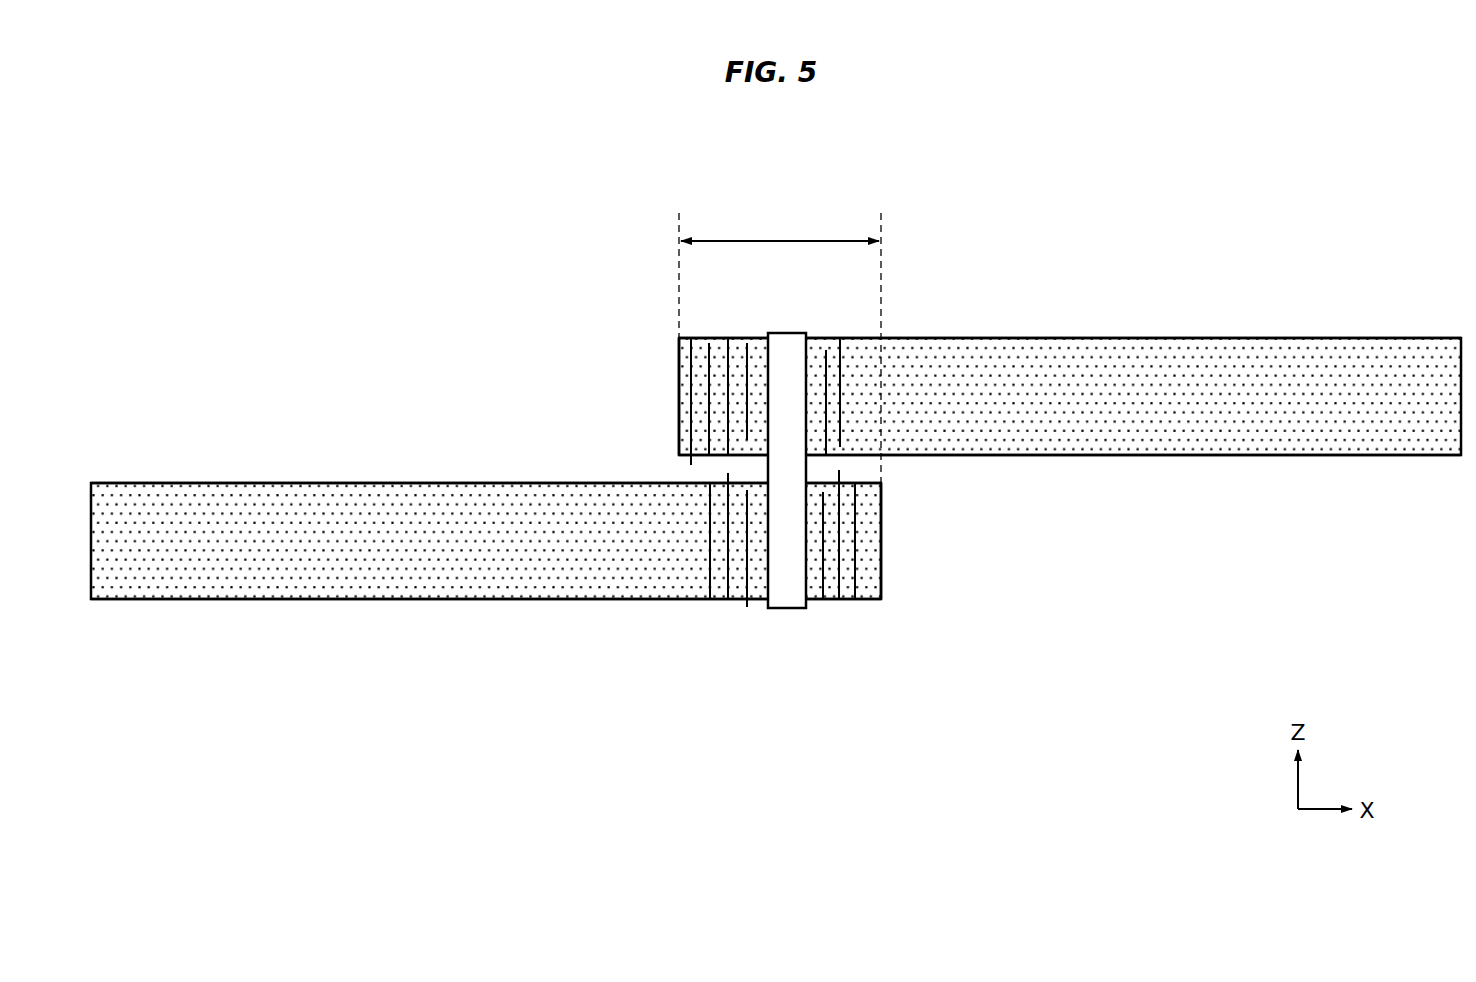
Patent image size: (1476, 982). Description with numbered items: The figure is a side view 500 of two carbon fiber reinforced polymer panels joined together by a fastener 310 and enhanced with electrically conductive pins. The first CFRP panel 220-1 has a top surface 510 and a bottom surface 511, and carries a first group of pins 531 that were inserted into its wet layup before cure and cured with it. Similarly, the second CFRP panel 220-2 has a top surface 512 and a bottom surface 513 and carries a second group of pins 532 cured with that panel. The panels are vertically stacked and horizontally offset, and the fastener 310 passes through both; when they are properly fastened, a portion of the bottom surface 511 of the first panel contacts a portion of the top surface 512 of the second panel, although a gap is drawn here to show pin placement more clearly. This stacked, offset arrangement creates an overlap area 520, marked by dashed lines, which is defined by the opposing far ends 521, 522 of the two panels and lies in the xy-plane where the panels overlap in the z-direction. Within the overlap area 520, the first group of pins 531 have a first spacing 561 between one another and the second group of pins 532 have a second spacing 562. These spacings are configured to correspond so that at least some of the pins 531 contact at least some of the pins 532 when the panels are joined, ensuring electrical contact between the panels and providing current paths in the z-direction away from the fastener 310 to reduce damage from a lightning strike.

The side view 500 is at (517, 161).
The first CFRP panel 220-1 is at (1325, 338).
The second CFRP panel 220-2 is at (213, 483).
The top surface 510 is at (1149, 334).
The bottom surface 511 is at (1149, 460).
The top surface 512 is at (364, 477).
The bottom surface 513 is at (364, 605).
The overlap area 520 is at (733, 240).
The far end 521 is at (676, 417).
The far end 522 is at (885, 510).
The first group of pins 531 is at (728, 338).
The second group of pins 532 is at (728, 599).
The first spacing 561 is at (698, 383).
The second spacing 562 is at (717, 503).
The fastener 310 is at (787, 333).